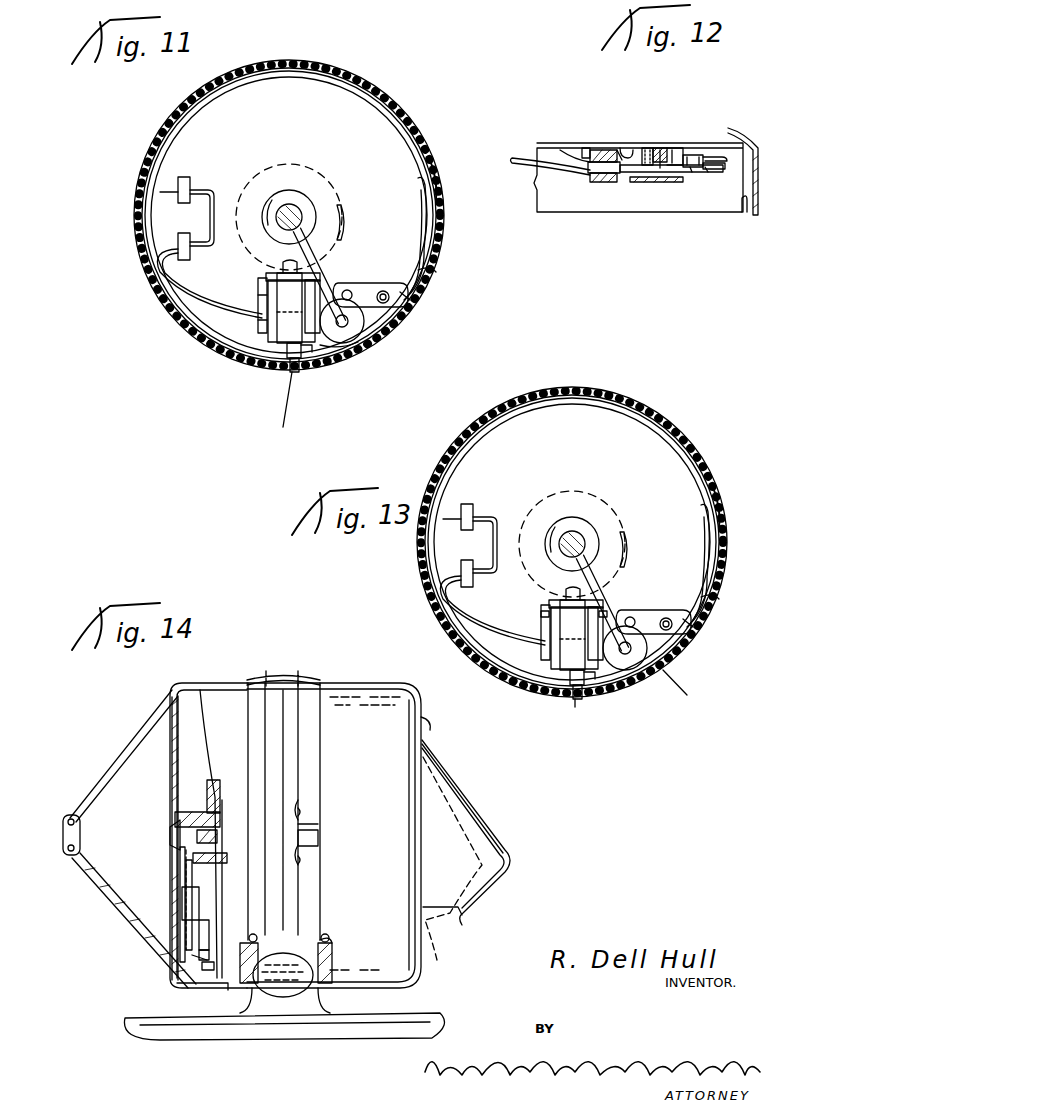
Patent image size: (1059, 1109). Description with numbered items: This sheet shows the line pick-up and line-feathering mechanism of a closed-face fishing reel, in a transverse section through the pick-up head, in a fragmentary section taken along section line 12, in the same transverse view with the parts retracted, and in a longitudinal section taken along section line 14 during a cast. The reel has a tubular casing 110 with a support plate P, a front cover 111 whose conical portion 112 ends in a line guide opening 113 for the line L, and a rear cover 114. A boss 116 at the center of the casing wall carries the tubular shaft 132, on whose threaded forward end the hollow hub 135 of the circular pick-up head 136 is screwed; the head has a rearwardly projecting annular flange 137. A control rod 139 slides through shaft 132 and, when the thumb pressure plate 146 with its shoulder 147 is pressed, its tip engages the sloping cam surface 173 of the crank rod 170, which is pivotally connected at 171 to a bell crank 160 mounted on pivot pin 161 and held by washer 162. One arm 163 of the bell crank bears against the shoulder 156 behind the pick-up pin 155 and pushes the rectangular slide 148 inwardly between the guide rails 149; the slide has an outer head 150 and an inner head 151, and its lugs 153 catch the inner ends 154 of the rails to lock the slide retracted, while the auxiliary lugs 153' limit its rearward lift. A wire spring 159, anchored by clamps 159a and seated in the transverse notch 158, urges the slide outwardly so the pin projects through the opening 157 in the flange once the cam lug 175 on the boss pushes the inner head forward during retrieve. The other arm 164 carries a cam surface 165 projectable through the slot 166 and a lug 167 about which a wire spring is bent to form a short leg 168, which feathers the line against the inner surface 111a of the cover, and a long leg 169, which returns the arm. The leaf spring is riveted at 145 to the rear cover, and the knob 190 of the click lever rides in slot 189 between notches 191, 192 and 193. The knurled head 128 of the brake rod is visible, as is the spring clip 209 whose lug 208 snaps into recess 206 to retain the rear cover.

In FIG. 14, the casing 110 is at (282, 676).
In FIG. 11, the front cover 111 is at (424, 142).
In FIG. 12, the front cover 111 is at (740, 142).
In FIG. 13, the front cover 111 is at (572, 533).
In FIG. 14, the front cover 111 is at (178, 686).
In FIG. 11, the inner surface of front cover 111a is at (438, 170).
In FIG. 12, the inner surface of front cover 111a is at (759, 150).
In FIG. 13, the inner surface of front cover 111a is at (744, 507).
In FIG. 14, the conical portion 112 is at (132, 718).
In FIG. 14, the line guide opening 113 is at (68, 814).
In FIG. 14, the rear cover 114 is at (332, 683).
In FIG. 11, the cylindrical boss 116 is at (303, 170).
In FIG. 13, the cylindrical boss 116 is at (572, 544).
In FIG. 14, the cylindrical boss 116 is at (214, 780).
In FIG. 14, the knurled head 128 is at (285, 980).
In FIG. 11, the tubular shaft 132 is at (289, 205).
In FIG. 13, the tubular shaft 132 is at (566, 511).
In FIG. 11, the hollow hub 135 is at (300, 205).
In FIG. 13, the hollow hub 135 is at (577, 504).
In FIG. 14, the hollow hub 135 is at (200, 812).
In FIG. 11, the pick-up head 136 is at (372, 96).
In FIG. 12, the pick-up head 136 is at (679, 148).
In FIG. 13, the pick-up head 136 is at (572, 542).
In FIG. 11, the annular flange 137 is at (396, 110).
In FIG. 12, the annular flange 137 is at (745, 208).
In FIG. 13, the annular flange 137 is at (557, 542).
In FIG. 14, the annular flange 137 is at (216, 975).
In FIG. 11, the control rod 139 is at (280, 208).
In FIG. 13, the control rod 139 is at (534, 510).
In FIG. 14, the control rod 139 is at (216, 832).
In FIG. 14, the rivet 145 is at (432, 726).
In FIG. 14, the thumb pressure plate 146 is at (500, 822).
In FIG. 14, the shoulder 147 is at (468, 918).
In FIG. 11, the slide 148 is at (284, 335).
In FIG. 12, the slide 148 is at (586, 156).
In FIG. 13, the slide 148 is at (539, 635).
In FIG. 11, the guide rails 149 is at (318, 335).
In FIG. 12, the guide rails 149 is at (586, 148).
In FIG. 13, the guide rails 149 is at (563, 667).
In FIG. 14, the guide rails 149 is at (184, 925).
In FIG. 11, the outer head 150 is at (265, 335).
In FIG. 12, the outer head 150 is at (612, 182).
In FIG. 13, the outer head 150 is at (552, 640).
In FIG. 14, the outer head 150 is at (199, 918).
In FIG. 11, the inner head 151 is at (284, 268).
In FIG. 12, the inner head 151 is at (610, 150).
In FIG. 13, the inner head 151 is at (555, 583).
In FIG. 11, the lugs 153 is at (275, 268).
In FIG. 13, the lugs 153 is at (583, 587).
In FIG. 14, the lugs 153 is at (164, 904).
In FIG. 12, the auxiliary lugs 153' is at (604, 120).
In FIG. 13, the inner ends of rails 154 is at (583, 602).
In FIG. 14, the inner ends of rails 154 is at (180, 898).
In FIG. 11, the pick-up pin 155 is at (297, 372).
In FIG. 13, the pick-up pin 155 is at (559, 716).
In FIG. 14, the pick-up pin 155 is at (199, 955).
In FIG. 11, the shoulder 156 is at (290, 358).
In FIG. 13, the shoulder 156 is at (546, 698).
In FIG. 14, the shoulder 156 is at (209, 945).
In FIG. 13, the opening 157 is at (591, 729).
In FIG. 14, the opening 157 is at (192, 988).
In FIG. 12, the transverse notch 158 is at (598, 183).
In FIG. 14, the transverse notch 158 is at (192, 957).
In FIG. 11, the wire spring 159 is at (182, 300).
In FIG. 12, the wire spring 159 is at (540, 158).
In FIG. 13, the wire spring 159 is at (466, 610).
In FIG. 11, the clamps 159a is at (200, 188).
In FIG. 13, the clamps 159a is at (429, 545).
In FIG. 11, the bell crank 160 is at (364, 320).
In FIG. 13, the bell crank 160 is at (637, 672).
In FIG. 11, the pivot pin 161 is at (348, 327).
In FIG. 12, the pivot pin 161 is at (648, 148).
In FIG. 13, the pivot pin 161 is at (637, 694).
In FIG. 11, the washer 162 is at (340, 346).
In FIG. 12, the washer 162 is at (660, 172).
In FIG. 11, the arm 163 is at (308, 352).
In FIG. 12, the arm 163 is at (632, 182).
In FIG. 13, the arm 163 is at (601, 724).
In FIG. 14, the arm 163 is at (207, 970).
In FIG. 11, the arm 164 is at (367, 283).
In FIG. 12, the arm 164 is at (714, 170).
In FIG. 13, the arm 164 is at (654, 602).
In FIG. 11, the cam surface 165 is at (408, 301).
In FIG. 13, the cam surface 165 is at (711, 645).
In FIG. 11, the slot 166 is at (437, 274).
In FIG. 12, the slot 166 is at (714, 155).
In FIG. 13, the slot 166 is at (731, 603).
In FIG. 11, the lug 167 is at (390, 303).
In FIG. 12, the lug 167 is at (693, 153).
In FIG. 13, the lug 167 is at (666, 624).
In FIG. 11, the short leg 168 is at (424, 265).
In FIG. 12, the short leg 168 is at (708, 172).
In FIG. 13, the short leg 168 is at (726, 575).
In FIG. 11, the long leg 169 is at (420, 220).
In FIG. 12, the long leg 169 is at (690, 172).
In FIG. 13, the long leg 169 is at (691, 561).
In FIG. 11, the crank rod 170 is at (335, 252).
In FIG. 12, the crank rod 170 is at (675, 148).
In FIG. 13, the crank rod 170 is at (614, 596).
In FIG. 11, the pivot connection 171 is at (348, 289).
In FIG. 13, the pivot connection 171 is at (648, 611).
In FIG. 14, the sloping cam surface 173 is at (170, 828).
In FIG. 11, the cam lug 175 is at (343, 205).
In FIG. 13, the cam lug 175 is at (635, 535).
In FIG. 14, the cam lug 175 is at (222, 855).
In FIG. 14, the slot 189 is at (300, 805).
In FIG. 14, the knob 190 is at (320, 840).
In FIG. 14, the notch 191 is at (312, 812).
In FIG. 14, the notch 192 is at (312, 860).
In FIG. 14, the notch 193 is at (318, 828).
In FIG. 14, the recess 206 is at (330, 935).
In FIG. 14, the lug 208 is at (328, 942).
In FIG. 14, the spring clip 209 is at (334, 960).
In FIG. 11, the section line 12 is at (256, 286).
In FIG. 13, the section line 14 is at (561, 787).
In FIG. 11, the line L is at (284, 410).
In FIG. 13, the line L is at (677, 690).
In FIG. 14, the line L is at (85, 878).
In FIG. 14, the support plate P is at (430, 1020).